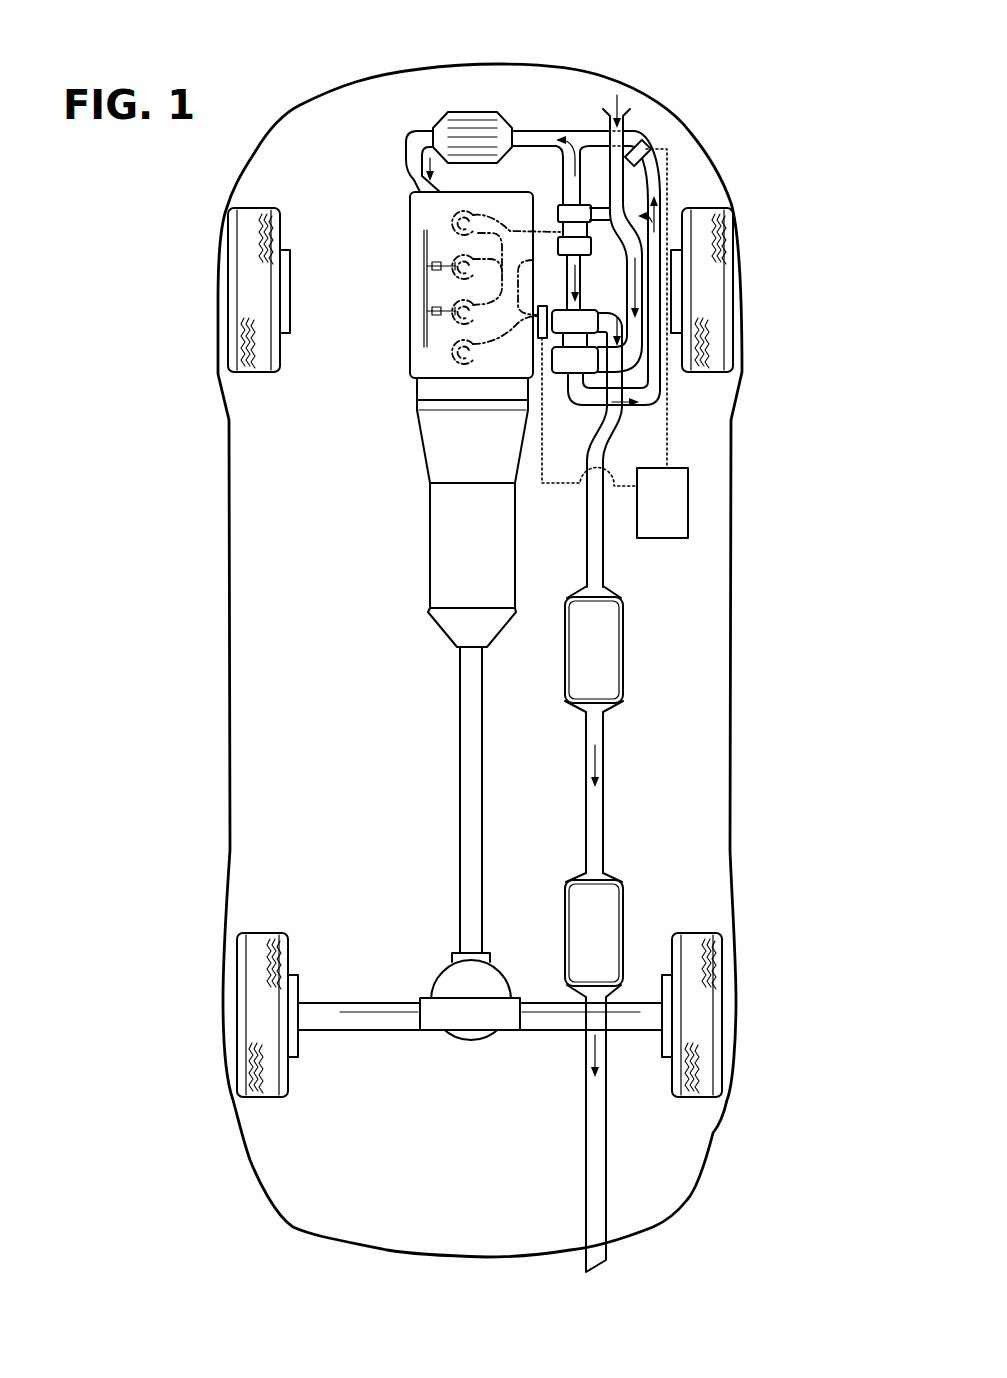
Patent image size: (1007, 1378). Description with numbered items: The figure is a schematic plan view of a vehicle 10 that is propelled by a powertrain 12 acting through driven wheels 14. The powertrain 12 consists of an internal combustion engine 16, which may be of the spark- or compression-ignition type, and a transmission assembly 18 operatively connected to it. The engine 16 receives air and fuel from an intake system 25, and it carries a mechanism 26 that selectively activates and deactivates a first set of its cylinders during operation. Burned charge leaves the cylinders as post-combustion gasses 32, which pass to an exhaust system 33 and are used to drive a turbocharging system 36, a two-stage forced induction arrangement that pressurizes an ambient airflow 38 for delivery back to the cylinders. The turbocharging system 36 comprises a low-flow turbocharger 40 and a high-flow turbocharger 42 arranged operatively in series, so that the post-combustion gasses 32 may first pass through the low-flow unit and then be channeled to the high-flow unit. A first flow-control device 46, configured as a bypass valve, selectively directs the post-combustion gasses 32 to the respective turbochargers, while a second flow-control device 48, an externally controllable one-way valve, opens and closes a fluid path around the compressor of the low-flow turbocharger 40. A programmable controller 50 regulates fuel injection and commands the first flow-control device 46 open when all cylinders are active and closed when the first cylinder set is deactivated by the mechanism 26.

The vehicle 10 is at (204, 549).
The powertrain 12 is at (376, 604).
The driven wheels 14 is at (260, 1020).
The internal combustion engine 16 is at (410, 252).
The transmission assembly 18 is at (472, 545).
The intake system 25 is at (526, 108).
The mechanism 26 is at (430, 311).
The post-combustion gasses 32 is at (578, 288).
The exhaust system 33 is at (638, 672).
The turbocharging system 36 is at (616, 274).
The airflow 38 is at (566, 147).
The low-flow turbocharger 40 is at (564, 196).
The high-flow turbocharger 42 is at (560, 384).
The first flow-control device 46 is at (551, 309).
The second flow-control device 48 is at (646, 146).
The programmable controller 50 is at (662, 503).